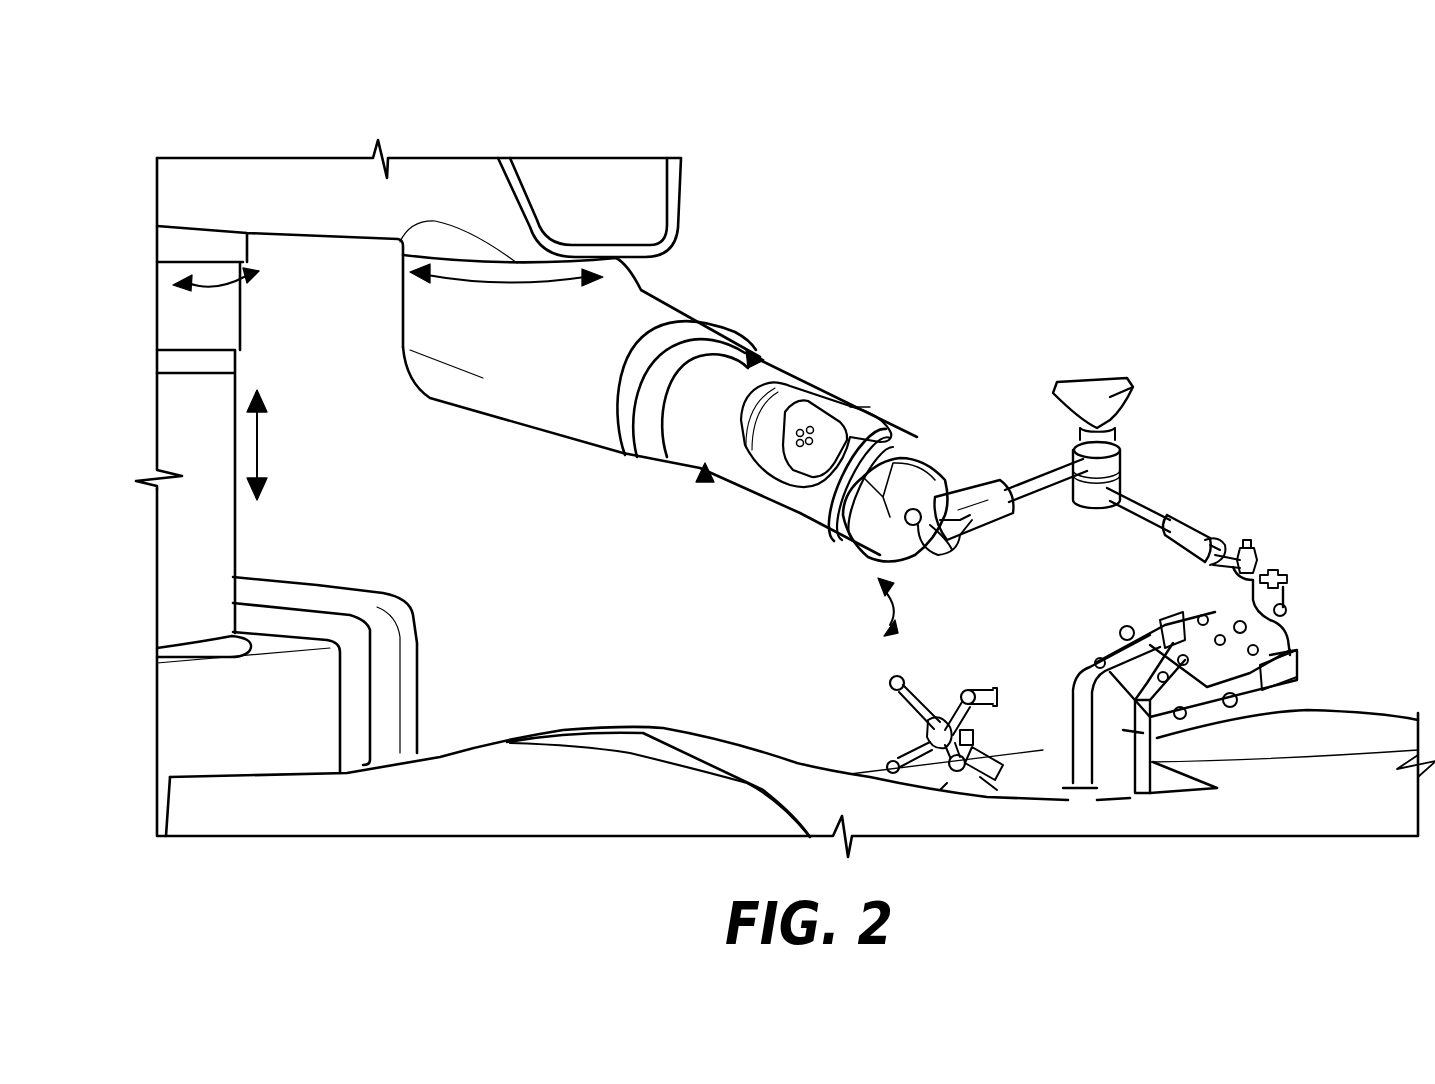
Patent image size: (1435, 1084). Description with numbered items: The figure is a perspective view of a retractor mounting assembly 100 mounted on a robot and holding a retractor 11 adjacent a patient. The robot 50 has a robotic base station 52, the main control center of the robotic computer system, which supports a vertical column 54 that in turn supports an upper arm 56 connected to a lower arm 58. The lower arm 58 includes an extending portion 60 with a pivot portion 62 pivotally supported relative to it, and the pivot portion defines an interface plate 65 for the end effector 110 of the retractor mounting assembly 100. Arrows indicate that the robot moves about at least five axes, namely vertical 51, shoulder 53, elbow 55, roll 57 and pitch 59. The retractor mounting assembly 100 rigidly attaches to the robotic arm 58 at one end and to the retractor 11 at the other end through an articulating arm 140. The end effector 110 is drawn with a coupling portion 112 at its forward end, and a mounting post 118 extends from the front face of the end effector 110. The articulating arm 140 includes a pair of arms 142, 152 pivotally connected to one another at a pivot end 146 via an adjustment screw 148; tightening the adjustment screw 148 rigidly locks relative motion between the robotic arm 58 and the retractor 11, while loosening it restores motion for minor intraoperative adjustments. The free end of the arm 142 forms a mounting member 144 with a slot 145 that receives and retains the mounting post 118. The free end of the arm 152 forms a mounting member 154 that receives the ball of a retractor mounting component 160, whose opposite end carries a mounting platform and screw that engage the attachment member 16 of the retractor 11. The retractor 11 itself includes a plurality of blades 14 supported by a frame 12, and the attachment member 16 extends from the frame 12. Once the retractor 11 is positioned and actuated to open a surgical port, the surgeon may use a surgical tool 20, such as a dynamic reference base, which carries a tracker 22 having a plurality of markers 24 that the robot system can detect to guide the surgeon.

The robot 50 is at (343, 150).
The upper arm 56 is at (273, 163).
The vertical column 54 is at (163, 413).
The shoulder axis 53 is at (246, 282).
The elbow axis 55 is at (501, 283).
The vertical axis 51 is at (258, 445).
The robotic base station 52 is at (300, 655).
The lower arm 58 is at (530, 403).
The roll axis 57 is at (680, 420).
The extending portion 60 is at (787, 366).
The pivot portion 62 is at (821, 490).
The interface plate 65 is at (843, 505).
The pitch axis 59 is at (877, 603).
The end effector 110 is at (921, 441).
The coupling nut 112 is at (933, 470).
The mounting post 118 is at (920, 526).
The slot 145 is at (957, 540).
The mounting member 144 is at (987, 517).
The arm 142 is at (1039, 466).
The pivot end 146 is at (1117, 457).
The adjustment screw 148 is at (1107, 397).
The retractor mounting assembly 100 is at (1186, 368).
The articulating arm 140 is at (1205, 449).
The arm 152 is at (1140, 507).
The mounting member 154 is at (1193, 545).
The retractor mounting component 160 is at (1217, 553).
The attachment member 16 is at (1283, 584).
The frame 12 is at (1291, 667).
The blades 14 is at (1077, 723).
The tracker 22 is at (935, 722).
The surgical tool 20 is at (967, 750).
The markers 24 is at (893, 763).
The retractor 11 is at (1297, 672).